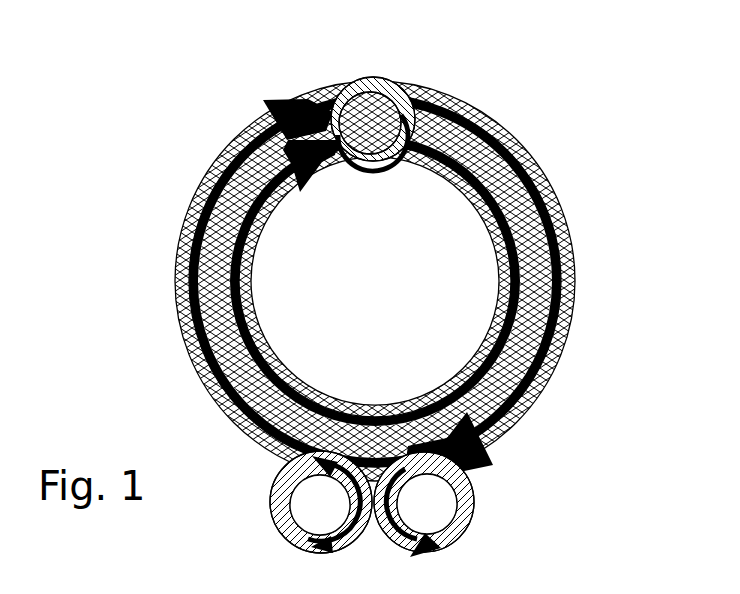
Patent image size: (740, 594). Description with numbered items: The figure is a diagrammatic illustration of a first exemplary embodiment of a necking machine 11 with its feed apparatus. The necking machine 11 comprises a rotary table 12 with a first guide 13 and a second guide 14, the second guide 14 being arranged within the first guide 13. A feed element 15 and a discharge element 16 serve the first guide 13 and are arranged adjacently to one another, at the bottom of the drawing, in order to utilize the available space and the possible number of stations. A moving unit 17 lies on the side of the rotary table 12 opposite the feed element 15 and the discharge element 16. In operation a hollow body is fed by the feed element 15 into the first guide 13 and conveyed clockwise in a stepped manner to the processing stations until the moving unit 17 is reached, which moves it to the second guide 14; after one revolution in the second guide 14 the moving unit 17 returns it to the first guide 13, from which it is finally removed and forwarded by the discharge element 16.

The necking machine 11 is at (409, 248).
The rotary table 12 is at (526, 162).
The first guide 13 is at (566, 237).
The second guide 14 is at (497, 308).
The feed element 15 is at (269, 488).
The discharge element 16 is at (476, 490).
The moving unit 17 is at (386, 72).